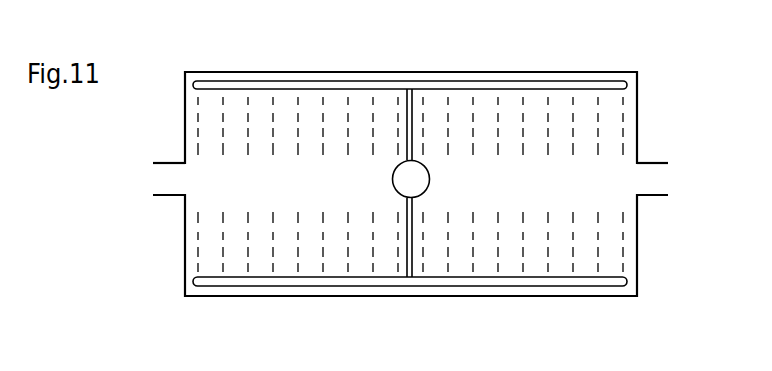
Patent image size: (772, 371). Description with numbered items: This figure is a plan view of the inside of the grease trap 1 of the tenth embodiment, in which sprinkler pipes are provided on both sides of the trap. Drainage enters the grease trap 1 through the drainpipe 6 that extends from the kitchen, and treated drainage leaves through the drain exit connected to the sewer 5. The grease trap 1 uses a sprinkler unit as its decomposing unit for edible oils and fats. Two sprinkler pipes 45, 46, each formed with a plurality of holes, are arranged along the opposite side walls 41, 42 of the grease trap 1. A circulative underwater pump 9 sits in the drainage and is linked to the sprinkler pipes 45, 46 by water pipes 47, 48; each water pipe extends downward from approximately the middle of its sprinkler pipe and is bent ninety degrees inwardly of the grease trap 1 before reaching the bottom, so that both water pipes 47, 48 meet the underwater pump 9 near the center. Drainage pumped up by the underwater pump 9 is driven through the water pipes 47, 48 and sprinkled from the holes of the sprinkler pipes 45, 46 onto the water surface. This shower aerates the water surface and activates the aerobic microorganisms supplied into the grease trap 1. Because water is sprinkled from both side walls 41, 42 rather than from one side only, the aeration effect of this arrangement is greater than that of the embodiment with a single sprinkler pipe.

The grease trap 1 is at (659, 69).
The sewer 5 is at (655, 164).
The drainpipe 6 is at (168, 166).
The circulative underwater pump 9 is at (393, 184).
The side wall 41 is at (558, 72).
The side wall 42 is at (578, 298).
The sprinkler pipe 45 is at (437, 87).
The sprinkler pipe 46 is at (513, 283).
The water pipe 47 is at (413, 128).
The water pipe 48 is at (413, 248).